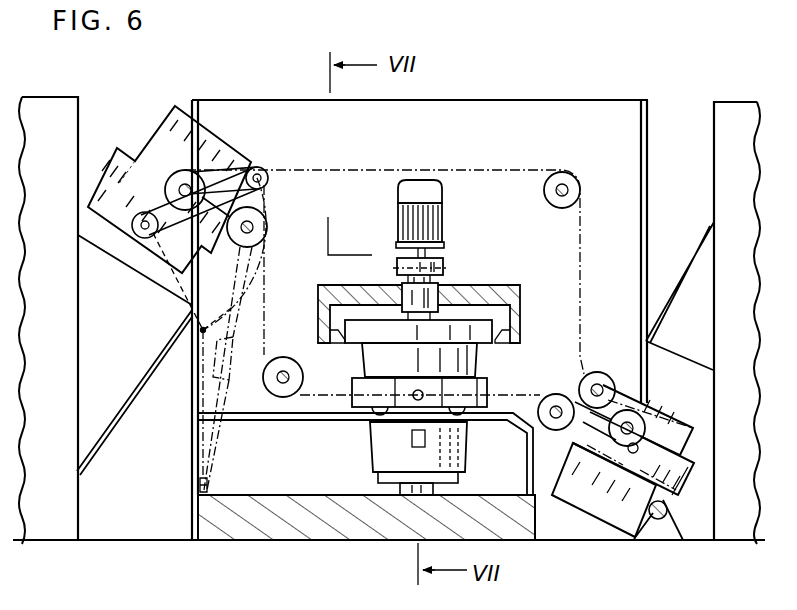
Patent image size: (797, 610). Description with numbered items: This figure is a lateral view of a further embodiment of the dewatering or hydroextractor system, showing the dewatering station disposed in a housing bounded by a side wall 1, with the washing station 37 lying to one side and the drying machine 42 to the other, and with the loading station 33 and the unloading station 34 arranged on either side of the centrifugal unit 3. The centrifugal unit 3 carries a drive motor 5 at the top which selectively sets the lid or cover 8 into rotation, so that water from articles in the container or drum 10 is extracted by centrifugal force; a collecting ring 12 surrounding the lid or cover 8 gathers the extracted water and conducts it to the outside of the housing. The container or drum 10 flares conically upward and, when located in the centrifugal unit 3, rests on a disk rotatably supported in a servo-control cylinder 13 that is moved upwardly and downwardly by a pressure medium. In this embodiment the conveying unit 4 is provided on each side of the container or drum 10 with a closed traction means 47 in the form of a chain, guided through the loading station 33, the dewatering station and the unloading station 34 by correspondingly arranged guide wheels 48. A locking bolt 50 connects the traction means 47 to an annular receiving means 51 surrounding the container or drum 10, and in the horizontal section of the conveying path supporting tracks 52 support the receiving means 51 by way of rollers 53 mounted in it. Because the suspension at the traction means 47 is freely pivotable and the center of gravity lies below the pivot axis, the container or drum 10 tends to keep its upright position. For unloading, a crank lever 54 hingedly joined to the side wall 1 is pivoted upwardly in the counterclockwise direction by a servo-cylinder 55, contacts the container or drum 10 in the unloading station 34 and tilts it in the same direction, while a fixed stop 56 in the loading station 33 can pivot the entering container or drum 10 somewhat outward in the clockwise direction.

The side wall 1 is at (578, 98).
The centrifugal unit 3 is at (457, 259).
The conveying unit 4 is at (488, 161).
The drive motor 5 is at (443, 200).
The lid or cover 8 is at (483, 345).
The container or drum 10 is at (467, 457).
The collecting ring 12 is at (334, 344).
The servo-control cylinder 13 is at (413, 493).
The loading station 33 is at (692, 501).
The unloading station 34 is at (103, 142).
The washing station 37 is at (730, 99).
The drying machine 42 is at (67, 95).
The traction means 47 is at (515, 169).
The guide wheels 48 is at (263, 221).
The locking bolt 50 is at (418, 401).
The receiving means 51 is at (350, 401).
The supporting tracks 52 is at (268, 421).
The rollers 53 is at (460, 412).
The crank lever 54 is at (257, 167).
The servo-cylinder 55 is at (213, 490).
The fixed stop 56 is at (658, 520).